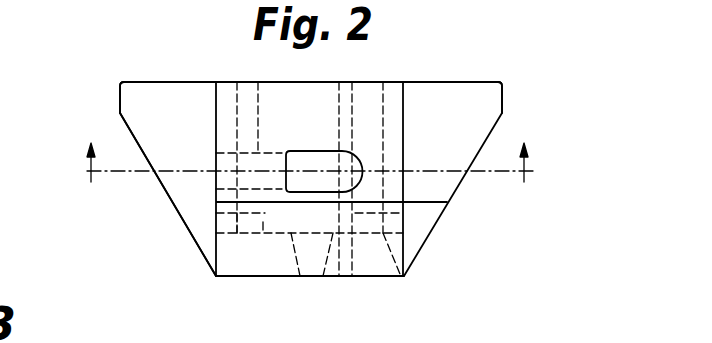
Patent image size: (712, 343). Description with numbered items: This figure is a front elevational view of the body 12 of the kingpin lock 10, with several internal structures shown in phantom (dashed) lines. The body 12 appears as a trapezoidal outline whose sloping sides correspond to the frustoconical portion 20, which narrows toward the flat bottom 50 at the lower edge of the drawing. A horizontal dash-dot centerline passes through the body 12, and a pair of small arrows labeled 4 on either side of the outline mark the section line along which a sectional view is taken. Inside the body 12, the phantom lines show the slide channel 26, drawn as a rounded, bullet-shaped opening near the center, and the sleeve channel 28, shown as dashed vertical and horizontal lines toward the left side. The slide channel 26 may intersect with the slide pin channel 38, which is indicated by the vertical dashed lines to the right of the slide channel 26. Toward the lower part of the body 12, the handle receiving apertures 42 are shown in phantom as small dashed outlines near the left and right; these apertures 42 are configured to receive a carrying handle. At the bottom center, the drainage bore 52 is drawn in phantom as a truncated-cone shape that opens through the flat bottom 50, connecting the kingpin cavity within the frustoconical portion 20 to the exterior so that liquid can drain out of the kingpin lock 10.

The section line 4- 4 is at (308, 150).
The kingpin lock 10 is at (147, 211).
The body 12 is at (206, 264).
The frustoconical portion 20 is at (120, 115).
The slide channel 26 is at (328, 151).
The sleeve channel 28 is at (258, 82).
The slide pin channel 38 is at (358, 82).
The handle receiving apertures 42 is at (222, 229).
The flat bottom 50 is at (240, 278).
The drainage bore 52 is at (312, 277).